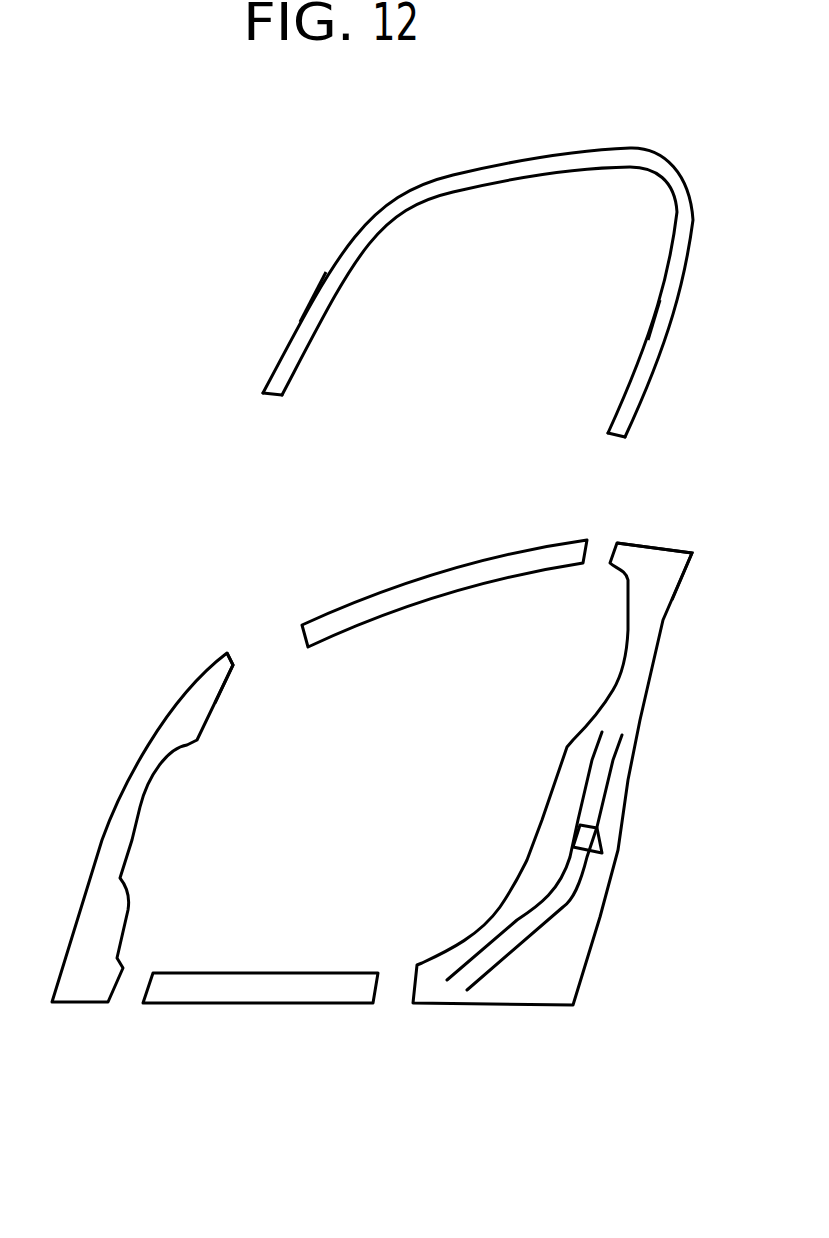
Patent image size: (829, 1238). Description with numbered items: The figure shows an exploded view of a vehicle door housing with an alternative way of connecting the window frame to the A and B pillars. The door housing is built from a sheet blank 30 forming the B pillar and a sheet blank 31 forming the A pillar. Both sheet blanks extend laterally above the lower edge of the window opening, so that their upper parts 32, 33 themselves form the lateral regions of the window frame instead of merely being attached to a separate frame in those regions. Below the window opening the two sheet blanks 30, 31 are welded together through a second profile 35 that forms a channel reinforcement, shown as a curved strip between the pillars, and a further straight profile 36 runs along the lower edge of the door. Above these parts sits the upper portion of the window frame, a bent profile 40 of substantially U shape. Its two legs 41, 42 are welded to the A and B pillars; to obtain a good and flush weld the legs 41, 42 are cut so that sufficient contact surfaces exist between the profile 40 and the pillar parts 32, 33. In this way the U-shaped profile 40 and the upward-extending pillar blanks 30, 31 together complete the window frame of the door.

The profile 40 is at (543, 155).
The profile leg 41 is at (648, 340).
The profile leg 42 is at (300, 322).
The sheet blank 30 is at (600, 868).
The sheet blank 31 is at (100, 853).
The part of the B pillar 32 is at (657, 588).
The part of the A pillar 33 is at (200, 683).
The second profile 35 is at (435, 578).
The sill member 36 is at (275, 990).